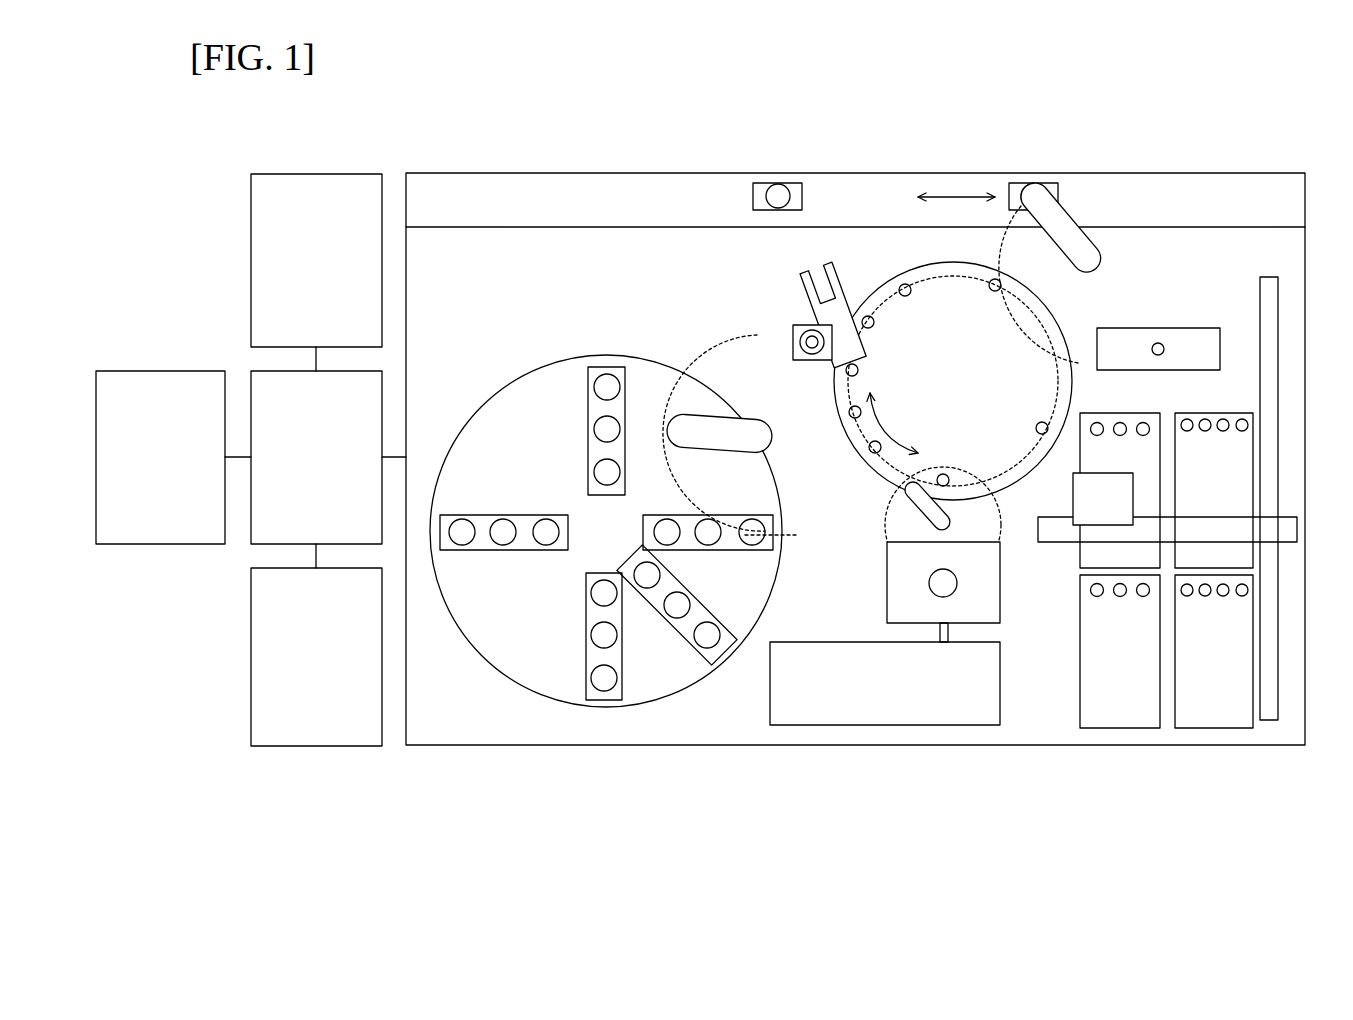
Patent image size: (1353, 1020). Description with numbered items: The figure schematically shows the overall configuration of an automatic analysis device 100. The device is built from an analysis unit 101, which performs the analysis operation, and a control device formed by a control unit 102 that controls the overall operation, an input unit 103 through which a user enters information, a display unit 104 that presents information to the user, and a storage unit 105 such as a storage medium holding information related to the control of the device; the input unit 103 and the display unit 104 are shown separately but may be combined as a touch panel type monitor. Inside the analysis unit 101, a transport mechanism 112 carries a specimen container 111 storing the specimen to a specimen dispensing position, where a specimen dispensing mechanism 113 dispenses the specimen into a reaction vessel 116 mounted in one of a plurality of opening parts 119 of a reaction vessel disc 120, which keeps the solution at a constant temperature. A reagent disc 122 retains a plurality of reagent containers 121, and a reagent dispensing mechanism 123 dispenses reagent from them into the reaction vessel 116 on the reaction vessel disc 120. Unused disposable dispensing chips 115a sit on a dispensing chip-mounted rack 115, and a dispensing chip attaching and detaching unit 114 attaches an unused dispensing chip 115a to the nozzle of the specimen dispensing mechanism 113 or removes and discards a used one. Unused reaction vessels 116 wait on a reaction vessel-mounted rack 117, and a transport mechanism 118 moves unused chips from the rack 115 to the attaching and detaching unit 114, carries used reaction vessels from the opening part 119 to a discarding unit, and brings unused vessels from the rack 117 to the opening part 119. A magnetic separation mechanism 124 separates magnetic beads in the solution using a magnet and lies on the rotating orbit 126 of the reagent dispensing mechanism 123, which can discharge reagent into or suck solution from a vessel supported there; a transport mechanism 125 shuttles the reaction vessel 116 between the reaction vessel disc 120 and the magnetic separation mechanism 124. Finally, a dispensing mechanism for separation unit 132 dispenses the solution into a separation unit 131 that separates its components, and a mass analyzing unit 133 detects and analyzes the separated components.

The automatic analysis device 100 is at (600, 147).
The analysis unit 101 is at (605, 750).
The control unit 102 is at (303, 473).
The input unit 103 is at (303, 673).
The display unit 104 is at (303, 278).
The storage unit 105 is at (147, 473).
The specimen container 111 is at (778, 185).
The transport mechanism 112 is at (460, 190).
The specimen dispensing mechanism 113 is at (1068, 212).
The dispensing chip attaching and detaching unit 114 is at (1160, 328).
The dispensing chip-mounted rack 115 is at (1212, 712).
The dispensing chip 115a is at (1232, 413).
The reaction vessel 116 is at (1128, 413).
The reaction vessel-mounted rack 117 is at (1120, 712).
The transport mechanism 118 is at (1073, 487).
The opening part 119 is at (908, 298).
The reaction vessel disc 120 is at (939, 394).
The reagent container 121 is at (607, 365).
The reagent disc 122 is at (494, 655).
The reagent dispensing mechanism 123 is at (775, 440).
The magnetic separation mechanism 124 is at (793, 336).
The transport mechanism 125 is at (797, 305).
The rotating orbit 126 is at (698, 358).
The separation unit 131 is at (960, 612).
The dispensing mechanism for separation unit 132 is at (908, 497).
The mass analyzing unit 133 is at (815, 700).